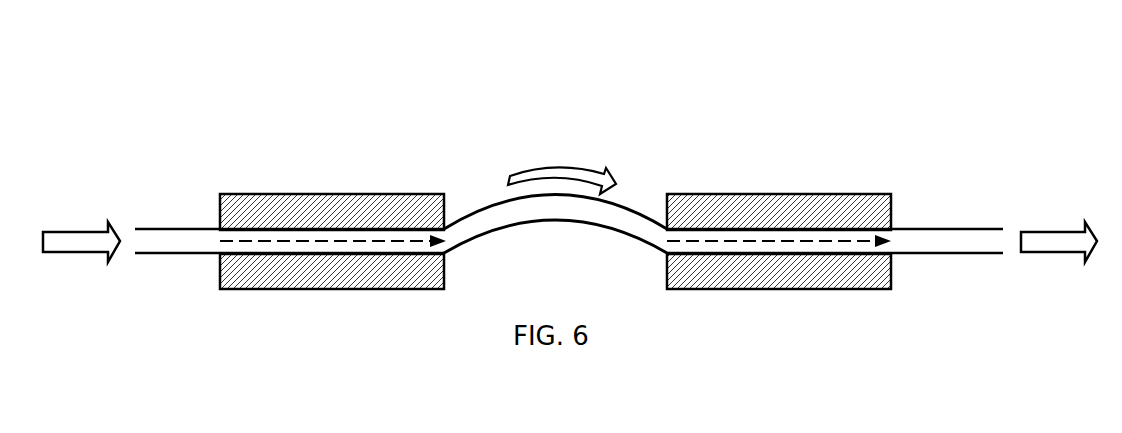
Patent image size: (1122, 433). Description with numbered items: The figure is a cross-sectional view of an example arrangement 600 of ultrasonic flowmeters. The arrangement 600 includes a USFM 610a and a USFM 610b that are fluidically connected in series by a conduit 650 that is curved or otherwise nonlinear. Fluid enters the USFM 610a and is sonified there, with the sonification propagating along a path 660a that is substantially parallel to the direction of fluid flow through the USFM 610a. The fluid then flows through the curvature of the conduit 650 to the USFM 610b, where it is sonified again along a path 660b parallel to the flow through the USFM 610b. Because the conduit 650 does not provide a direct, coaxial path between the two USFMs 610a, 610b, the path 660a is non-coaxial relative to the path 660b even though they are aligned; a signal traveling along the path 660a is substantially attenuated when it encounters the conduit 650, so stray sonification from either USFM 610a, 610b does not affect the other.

The arrangement 600 is at (211, 57).
The USFM 610a is at (258, 192).
The USFM 610b is at (870, 289).
The conduit 650 is at (540, 222).
The path 660a is at (373, 240).
The path 660b is at (760, 240).